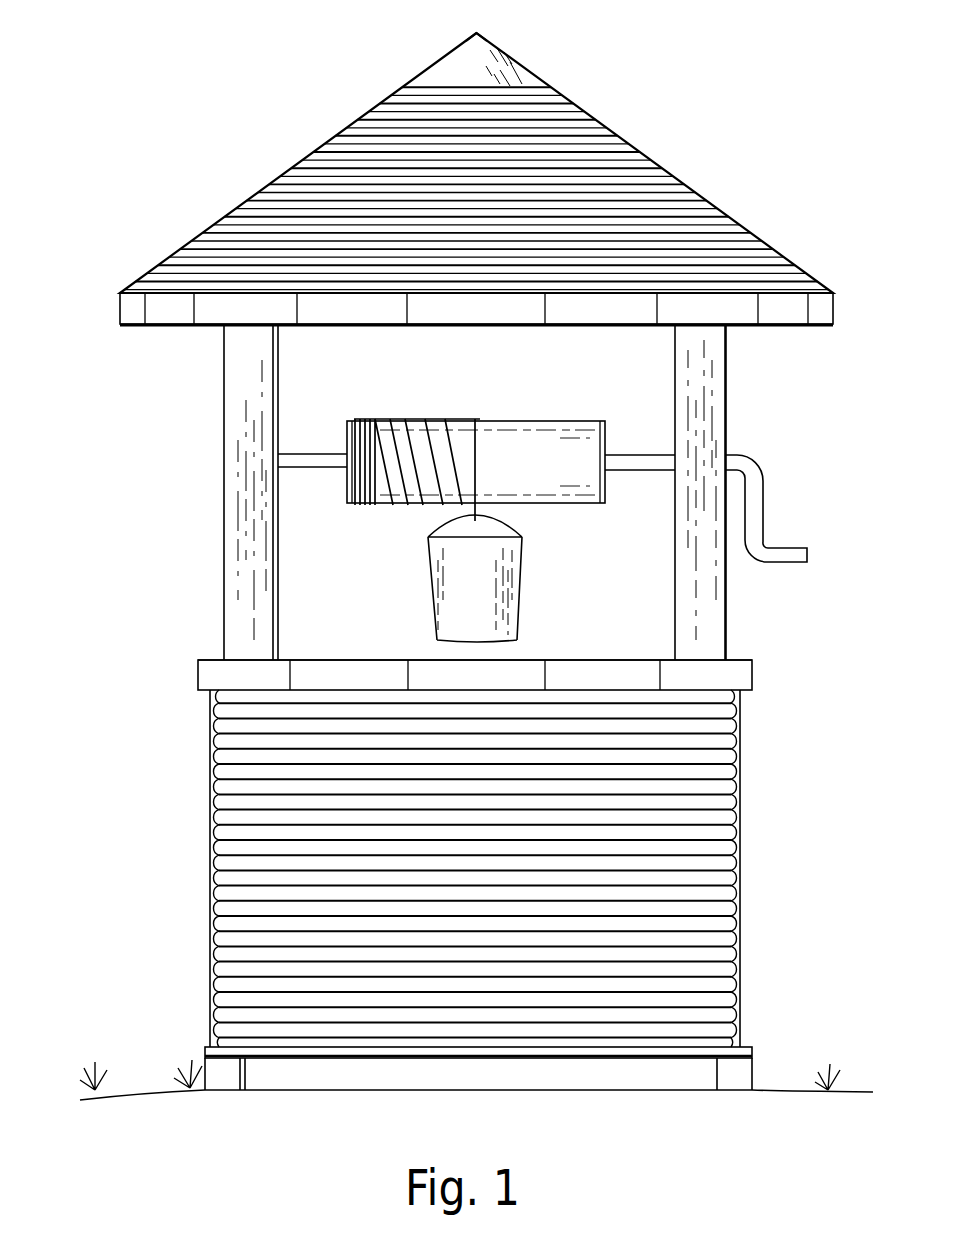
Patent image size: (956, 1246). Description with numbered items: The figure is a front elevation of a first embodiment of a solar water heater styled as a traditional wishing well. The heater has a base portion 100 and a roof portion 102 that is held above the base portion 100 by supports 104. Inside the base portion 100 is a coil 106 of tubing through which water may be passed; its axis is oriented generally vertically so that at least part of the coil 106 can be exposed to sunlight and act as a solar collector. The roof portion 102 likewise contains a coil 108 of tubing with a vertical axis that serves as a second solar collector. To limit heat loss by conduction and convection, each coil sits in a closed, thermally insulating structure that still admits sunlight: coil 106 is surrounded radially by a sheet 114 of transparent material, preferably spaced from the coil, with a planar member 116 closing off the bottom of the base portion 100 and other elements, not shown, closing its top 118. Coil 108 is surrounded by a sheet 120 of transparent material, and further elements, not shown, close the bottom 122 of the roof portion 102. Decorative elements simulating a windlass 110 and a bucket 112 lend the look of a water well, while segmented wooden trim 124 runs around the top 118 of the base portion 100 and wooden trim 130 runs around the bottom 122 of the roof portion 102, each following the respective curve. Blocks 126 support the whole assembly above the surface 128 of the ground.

The base portion 100 is at (170, 803).
The roof portion 102 is at (330, 79).
The supports 104 is at (240, 414).
The coil 106 is at (712, 835).
The coil 108 is at (681, 200).
The windlass 110 is at (652, 463).
The bucket 112 is at (510, 598).
The sheet of transparent material 114 is at (210, 752).
The planar member 116 is at (742, 1052).
The top of base portion 118 is at (536, 652).
The sheet of transparent material 120 is at (530, 67).
The bottom of roof portion 122 is at (575, 333).
The wooden trim 124 is at (380, 672).
The blocks 126 is at (733, 1075).
The surface of the ground 128 is at (143, 1090).
The wooden trim 130 is at (490, 306).